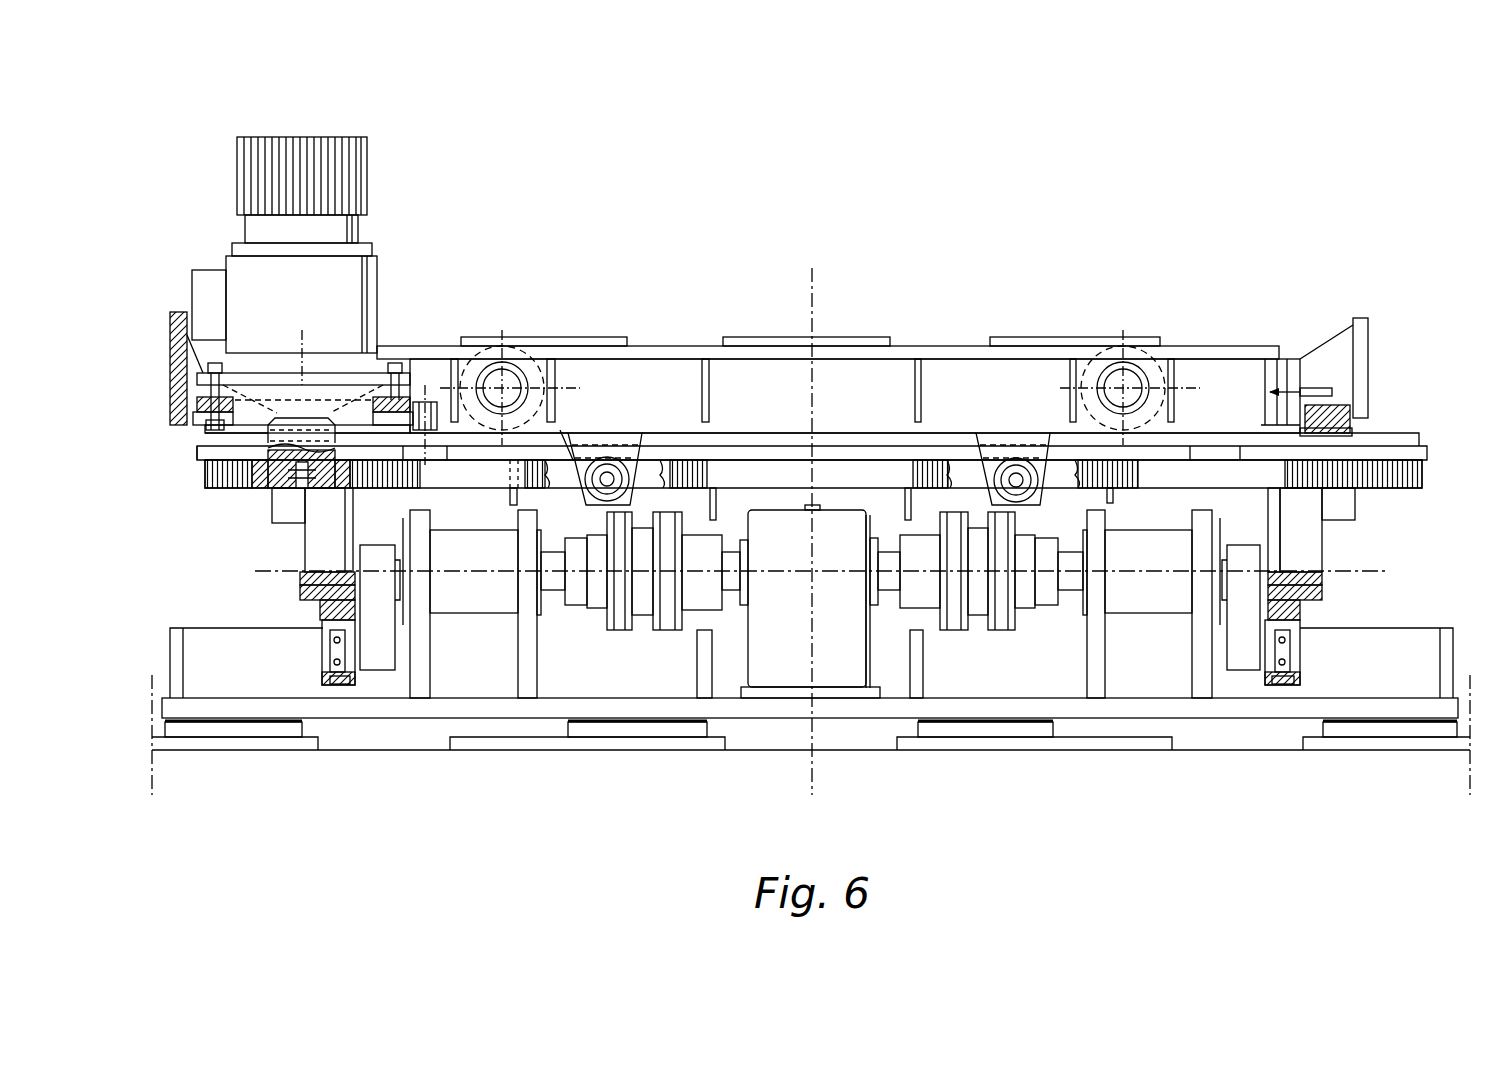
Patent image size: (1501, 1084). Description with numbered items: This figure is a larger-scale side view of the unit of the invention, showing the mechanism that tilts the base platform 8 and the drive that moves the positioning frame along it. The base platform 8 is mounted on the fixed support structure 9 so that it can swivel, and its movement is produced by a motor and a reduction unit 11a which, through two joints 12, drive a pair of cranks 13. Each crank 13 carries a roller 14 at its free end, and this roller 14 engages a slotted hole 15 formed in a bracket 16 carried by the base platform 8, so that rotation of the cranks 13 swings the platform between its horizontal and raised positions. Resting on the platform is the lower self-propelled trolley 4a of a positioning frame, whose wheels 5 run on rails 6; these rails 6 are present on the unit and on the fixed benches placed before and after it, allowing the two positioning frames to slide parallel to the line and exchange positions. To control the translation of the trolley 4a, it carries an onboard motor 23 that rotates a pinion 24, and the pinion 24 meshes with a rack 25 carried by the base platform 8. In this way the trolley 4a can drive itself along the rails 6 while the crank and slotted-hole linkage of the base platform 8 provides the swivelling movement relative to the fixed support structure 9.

The self-propelled trolley 4a is at (1238, 345).
The wheels 5 is at (540, 346).
The rails 6 is at (1400, 450).
The base platform 8 is at (290, 542).
The fixed support structure 9 is at (1460, 663).
The reduction unit 11a is at (832, 668).
The joints 12 is at (645, 598).
The cranks 13 is at (380, 655).
The roller 14 is at (350, 685).
The slotted hole 15 is at (322, 662).
The bracket 16 is at (302, 556).
The onboard motor 23 is at (372, 287).
The pinion 24 is at (258, 490).
The rack 25 is at (1405, 490).